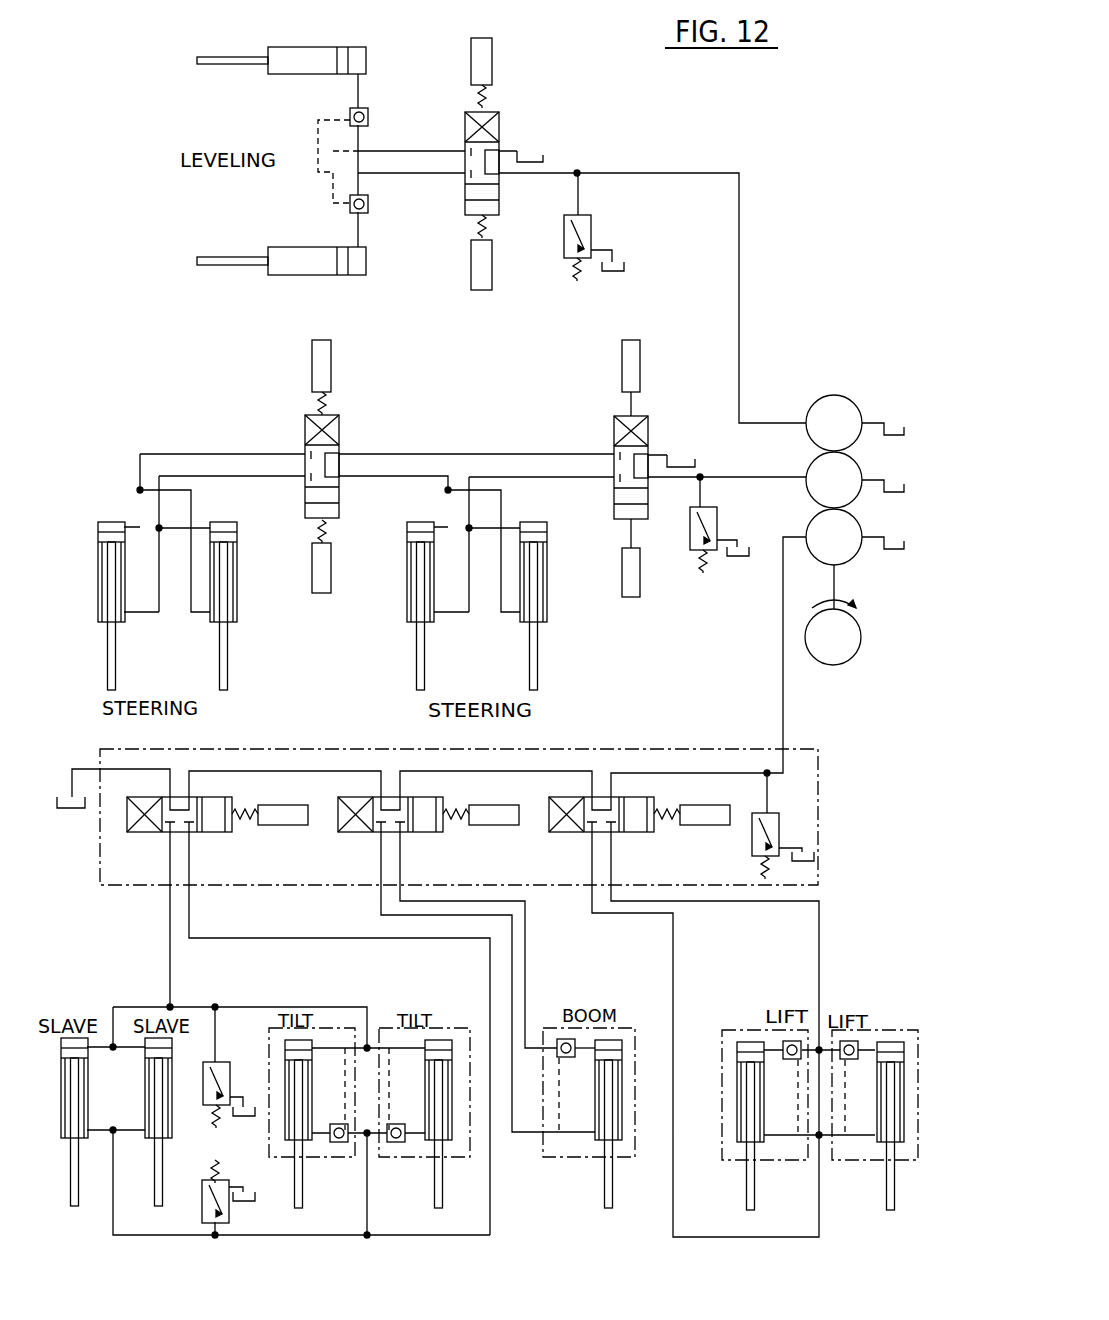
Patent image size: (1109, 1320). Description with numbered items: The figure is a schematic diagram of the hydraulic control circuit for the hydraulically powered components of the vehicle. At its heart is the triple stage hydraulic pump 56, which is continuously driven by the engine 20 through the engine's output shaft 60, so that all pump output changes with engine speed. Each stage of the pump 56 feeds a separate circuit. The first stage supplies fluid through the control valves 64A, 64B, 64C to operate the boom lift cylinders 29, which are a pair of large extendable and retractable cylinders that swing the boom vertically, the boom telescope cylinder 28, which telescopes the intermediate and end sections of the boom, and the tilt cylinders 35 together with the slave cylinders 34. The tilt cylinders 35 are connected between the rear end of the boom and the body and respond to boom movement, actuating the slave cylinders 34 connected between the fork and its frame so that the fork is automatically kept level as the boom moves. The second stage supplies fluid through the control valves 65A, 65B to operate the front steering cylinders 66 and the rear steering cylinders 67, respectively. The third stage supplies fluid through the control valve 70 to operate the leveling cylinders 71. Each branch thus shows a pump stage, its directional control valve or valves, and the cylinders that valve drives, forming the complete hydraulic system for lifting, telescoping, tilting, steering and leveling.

The leveling cylinders 71 is at (293, 75).
The control valve 70 is at (502, 131).
The hydraulic pump 56 is at (841, 392).
The output shaft 60 is at (838, 590).
The engine 20 is at (858, 637).
The control valve 65B is at (303, 430).
The control valve 65A is at (612, 430).
The rear steering cylinders 67 is at (205, 620).
The front steering cylinders 66 is at (517, 620).
The control valve 64C is at (197, 834).
The control valve 64B is at (411, 834).
The control valve 64A is at (583, 835).
The slave cylinders 34 is at (145, 1095).
The tilt cylinders 35 is at (285, 1050).
The hydraulic cylinder 28 is at (610, 1040).
The hydraulic lift cylinders 29 is at (752, 1040).